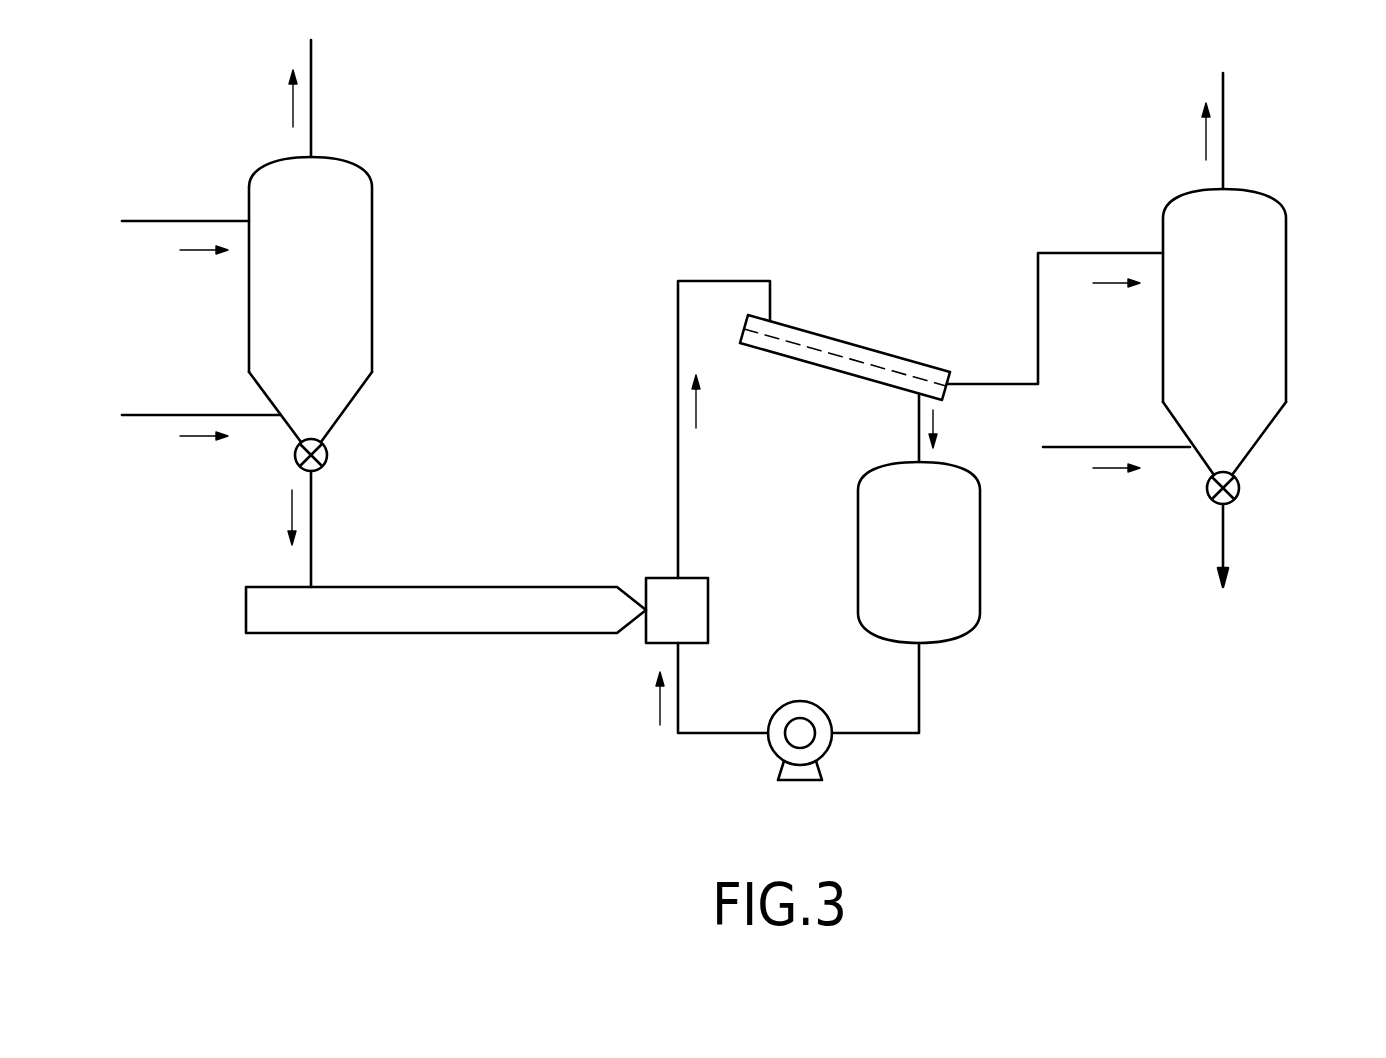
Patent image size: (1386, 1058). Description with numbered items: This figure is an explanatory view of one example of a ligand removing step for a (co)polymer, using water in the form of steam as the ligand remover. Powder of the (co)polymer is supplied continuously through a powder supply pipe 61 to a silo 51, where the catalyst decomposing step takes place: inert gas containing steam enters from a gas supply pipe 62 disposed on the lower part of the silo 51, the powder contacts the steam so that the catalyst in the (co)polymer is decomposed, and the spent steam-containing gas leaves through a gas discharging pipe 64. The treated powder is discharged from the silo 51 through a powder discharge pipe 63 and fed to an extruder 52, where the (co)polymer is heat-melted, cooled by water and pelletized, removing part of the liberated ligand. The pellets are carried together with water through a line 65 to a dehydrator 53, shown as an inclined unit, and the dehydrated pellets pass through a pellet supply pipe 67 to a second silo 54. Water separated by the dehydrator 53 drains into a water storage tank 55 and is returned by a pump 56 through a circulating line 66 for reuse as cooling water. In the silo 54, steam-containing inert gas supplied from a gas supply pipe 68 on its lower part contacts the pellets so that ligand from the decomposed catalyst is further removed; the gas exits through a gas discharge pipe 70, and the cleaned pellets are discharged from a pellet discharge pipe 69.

The silo 51 is at (352, 250).
The extruder 52 is at (517, 602).
The dehydrator 53 is at (865, 347).
The silo 54 is at (1280, 282).
The water storage tank 55 is at (975, 583).
The pump 56 is at (800, 700).
The powder supply pipe 61 is at (178, 221).
The gas supply pipe 62 is at (180, 415).
The powder discharge pipe 63 is at (311, 510).
The gas discharging pipe 64 is at (311, 97).
The line 65 is at (678, 383).
The circulating line 66 is at (919, 690).
The pellet supply pipe 67 is at (1038, 275).
The gas supply pipe 68 is at (1098, 447).
The pellet discharge pipe 69 is at (1223, 523).
The gas discharge pipe 70 is at (1223, 133).